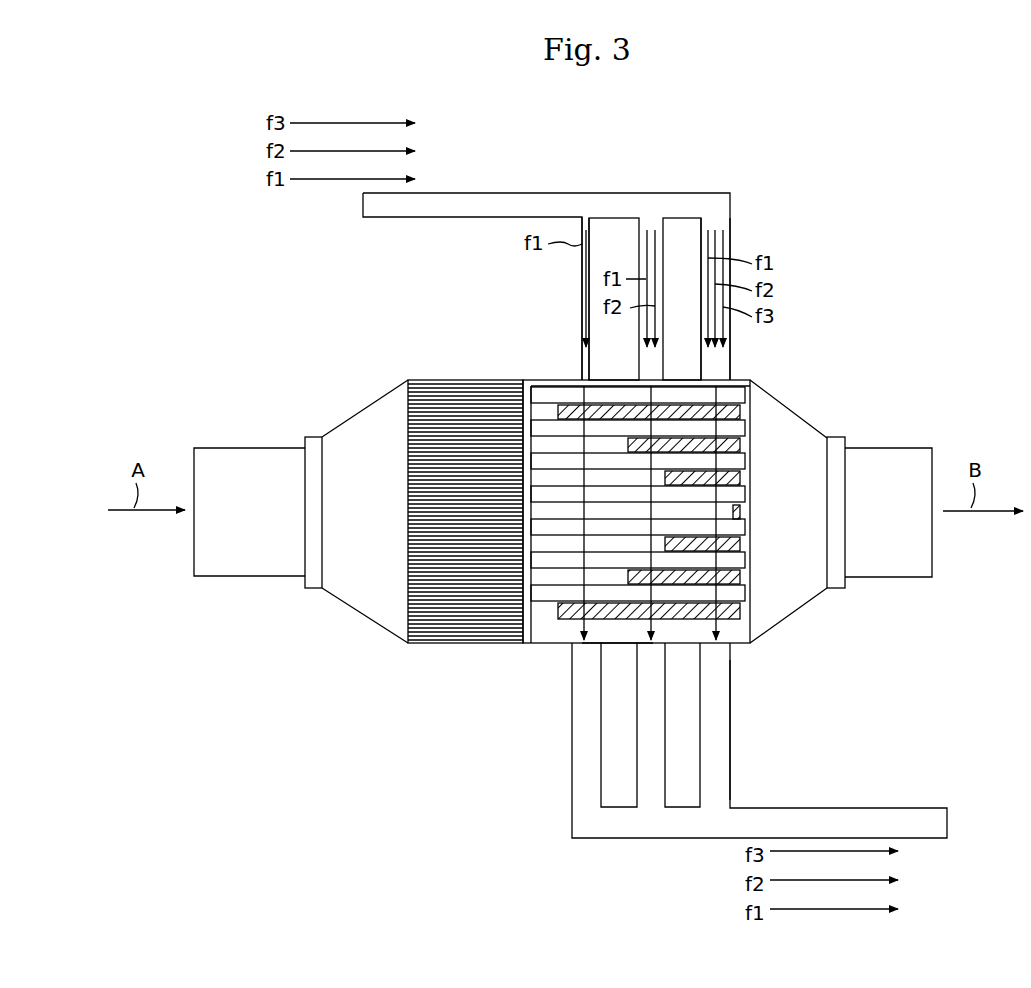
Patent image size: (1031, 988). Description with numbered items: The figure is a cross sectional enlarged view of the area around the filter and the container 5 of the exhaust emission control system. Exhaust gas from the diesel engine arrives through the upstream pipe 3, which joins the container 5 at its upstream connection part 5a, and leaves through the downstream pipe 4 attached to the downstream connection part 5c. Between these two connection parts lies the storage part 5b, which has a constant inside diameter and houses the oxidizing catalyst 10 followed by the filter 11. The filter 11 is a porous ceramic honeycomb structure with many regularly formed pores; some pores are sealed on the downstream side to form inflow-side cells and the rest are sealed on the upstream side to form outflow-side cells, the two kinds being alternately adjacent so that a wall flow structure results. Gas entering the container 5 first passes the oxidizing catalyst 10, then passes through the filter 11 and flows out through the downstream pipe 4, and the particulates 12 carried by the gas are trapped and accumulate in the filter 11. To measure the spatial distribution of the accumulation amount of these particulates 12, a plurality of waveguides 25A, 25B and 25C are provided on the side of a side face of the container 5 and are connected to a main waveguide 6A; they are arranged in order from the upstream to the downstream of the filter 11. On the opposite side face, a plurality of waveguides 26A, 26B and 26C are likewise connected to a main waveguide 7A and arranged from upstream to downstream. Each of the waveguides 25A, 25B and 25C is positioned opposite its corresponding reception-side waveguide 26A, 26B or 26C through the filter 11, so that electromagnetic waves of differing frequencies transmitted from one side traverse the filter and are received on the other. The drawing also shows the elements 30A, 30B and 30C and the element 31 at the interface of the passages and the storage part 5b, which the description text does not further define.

The upstream pipe 3 is at (249, 460).
The downstream pipe 4 is at (908, 461).
The container 5 is at (575, 493).
The upstream connection part 5a is at (362, 422).
The storage part 5b is at (528, 380).
The downstream connection part 5c is at (790, 420).
The main waveguide 6A is at (505, 203).
The main waveguide 7A is at (838, 808).
The oxidizing catalyst 10 is at (428, 645).
The filter 11 is at (735, 380).
The particulates 12 is at (745, 478).
The waveguide 25A is at (582, 279).
The waveguide 25B is at (639, 260).
The waveguide 25C is at (730, 238).
The waveguide 26A is at (572, 720).
The waveguide 26B is at (637, 742).
The waveguide 26C is at (730, 718).
The first injection pipe 30A is at (582, 380).
The second injection pipe 30B is at (646, 380).
The third injection pipe 30C is at (702, 380).
The injection outlets 31 is at (650, 645).